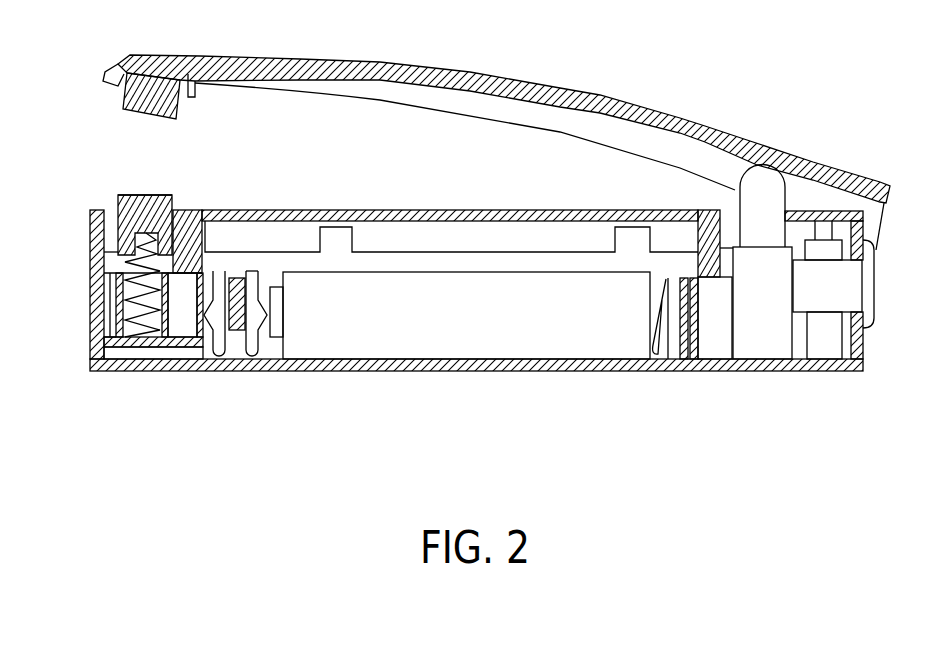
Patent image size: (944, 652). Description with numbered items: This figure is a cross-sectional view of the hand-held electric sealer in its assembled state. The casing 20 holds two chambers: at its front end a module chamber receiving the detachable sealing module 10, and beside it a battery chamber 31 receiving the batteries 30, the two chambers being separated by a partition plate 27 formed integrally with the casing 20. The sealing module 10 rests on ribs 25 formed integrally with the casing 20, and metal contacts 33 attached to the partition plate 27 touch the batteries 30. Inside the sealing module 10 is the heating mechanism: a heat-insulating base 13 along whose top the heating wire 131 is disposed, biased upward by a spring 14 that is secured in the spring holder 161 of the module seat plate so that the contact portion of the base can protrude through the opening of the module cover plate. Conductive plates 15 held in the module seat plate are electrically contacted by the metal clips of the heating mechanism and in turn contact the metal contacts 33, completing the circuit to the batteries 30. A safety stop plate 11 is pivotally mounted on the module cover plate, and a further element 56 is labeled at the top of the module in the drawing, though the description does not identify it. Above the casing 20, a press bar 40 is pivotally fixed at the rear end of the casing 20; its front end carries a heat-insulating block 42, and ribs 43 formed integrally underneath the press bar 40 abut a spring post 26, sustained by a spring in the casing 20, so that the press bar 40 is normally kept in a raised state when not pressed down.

The sealing module 10 is at (190, 208).
The safety stop plate 11 is at (92, 226).
The heat-insulating base 13 is at (125, 206).
The heating wire 131 is at (143, 193).
The spring 14 is at (118, 293).
The conductive plates 15 is at (198, 360).
The spring holder 161 is at (137, 330).
The casing 20 is at (115, 371).
The ribs 25 is at (150, 353).
The spring post 26 is at (797, 152).
The partition plate 27 is at (237, 353).
The batteries 30 is at (533, 340).
The battery chamber 31 is at (407, 262).
The metal contacts 33 is at (257, 267).
The press bar 40 is at (540, 78).
The heat-insulating block 42 is at (124, 95).
The ribs 43 is at (773, 185).
The push button 56 is at (150, 194).